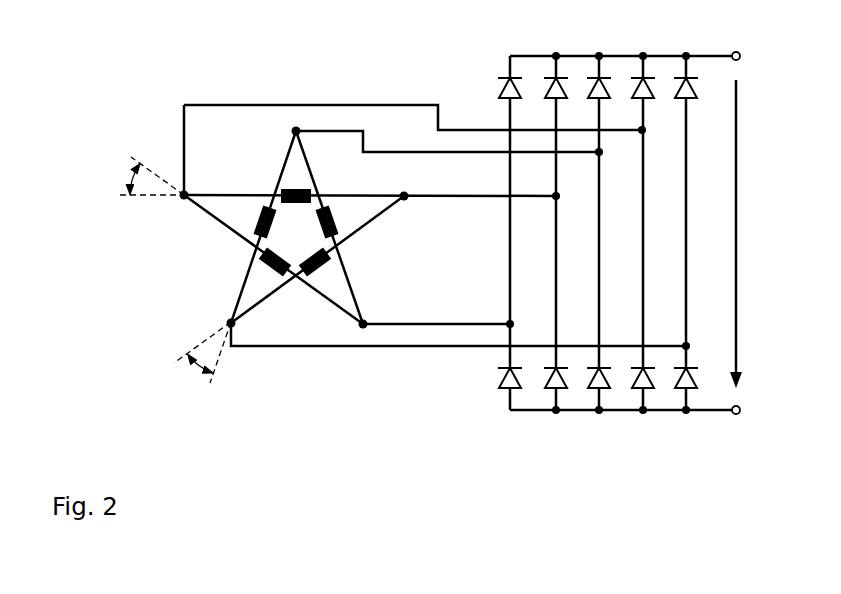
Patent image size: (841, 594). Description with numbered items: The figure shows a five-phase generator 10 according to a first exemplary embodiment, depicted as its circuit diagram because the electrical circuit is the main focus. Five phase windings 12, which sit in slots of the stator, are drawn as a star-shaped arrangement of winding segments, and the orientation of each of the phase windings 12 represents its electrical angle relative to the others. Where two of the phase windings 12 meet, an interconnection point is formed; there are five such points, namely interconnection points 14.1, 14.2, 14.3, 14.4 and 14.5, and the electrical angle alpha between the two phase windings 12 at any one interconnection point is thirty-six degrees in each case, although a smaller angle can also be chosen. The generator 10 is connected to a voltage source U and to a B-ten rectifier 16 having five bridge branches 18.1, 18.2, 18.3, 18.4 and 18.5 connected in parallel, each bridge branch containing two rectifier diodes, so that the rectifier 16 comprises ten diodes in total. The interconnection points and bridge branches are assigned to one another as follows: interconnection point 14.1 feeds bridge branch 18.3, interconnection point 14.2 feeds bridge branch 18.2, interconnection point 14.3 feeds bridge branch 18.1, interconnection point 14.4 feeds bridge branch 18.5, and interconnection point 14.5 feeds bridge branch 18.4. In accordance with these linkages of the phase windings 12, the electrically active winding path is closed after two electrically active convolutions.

The five-phase generator 10 is at (270, 428).
The phase windings 12 is at (229, 203).
The interconnection point 14.1 is at (296, 131).
The interconnection point 14.2 is at (404, 196).
The interconnection point 14.3 is at (363, 324).
The interconnection point 14.4 is at (231, 323).
The interconnection point 14.5 is at (184, 195).
The rectifier 16 is at (590, 478).
The bridge branch 18.1 is at (510, 420).
The bridge branch 18.2 is at (556, 420).
The bridge branch 18.3 is at (599, 420).
The bridge branch 18.4 is at (643, 420).
The bridge branch 18.5 is at (687, 420).